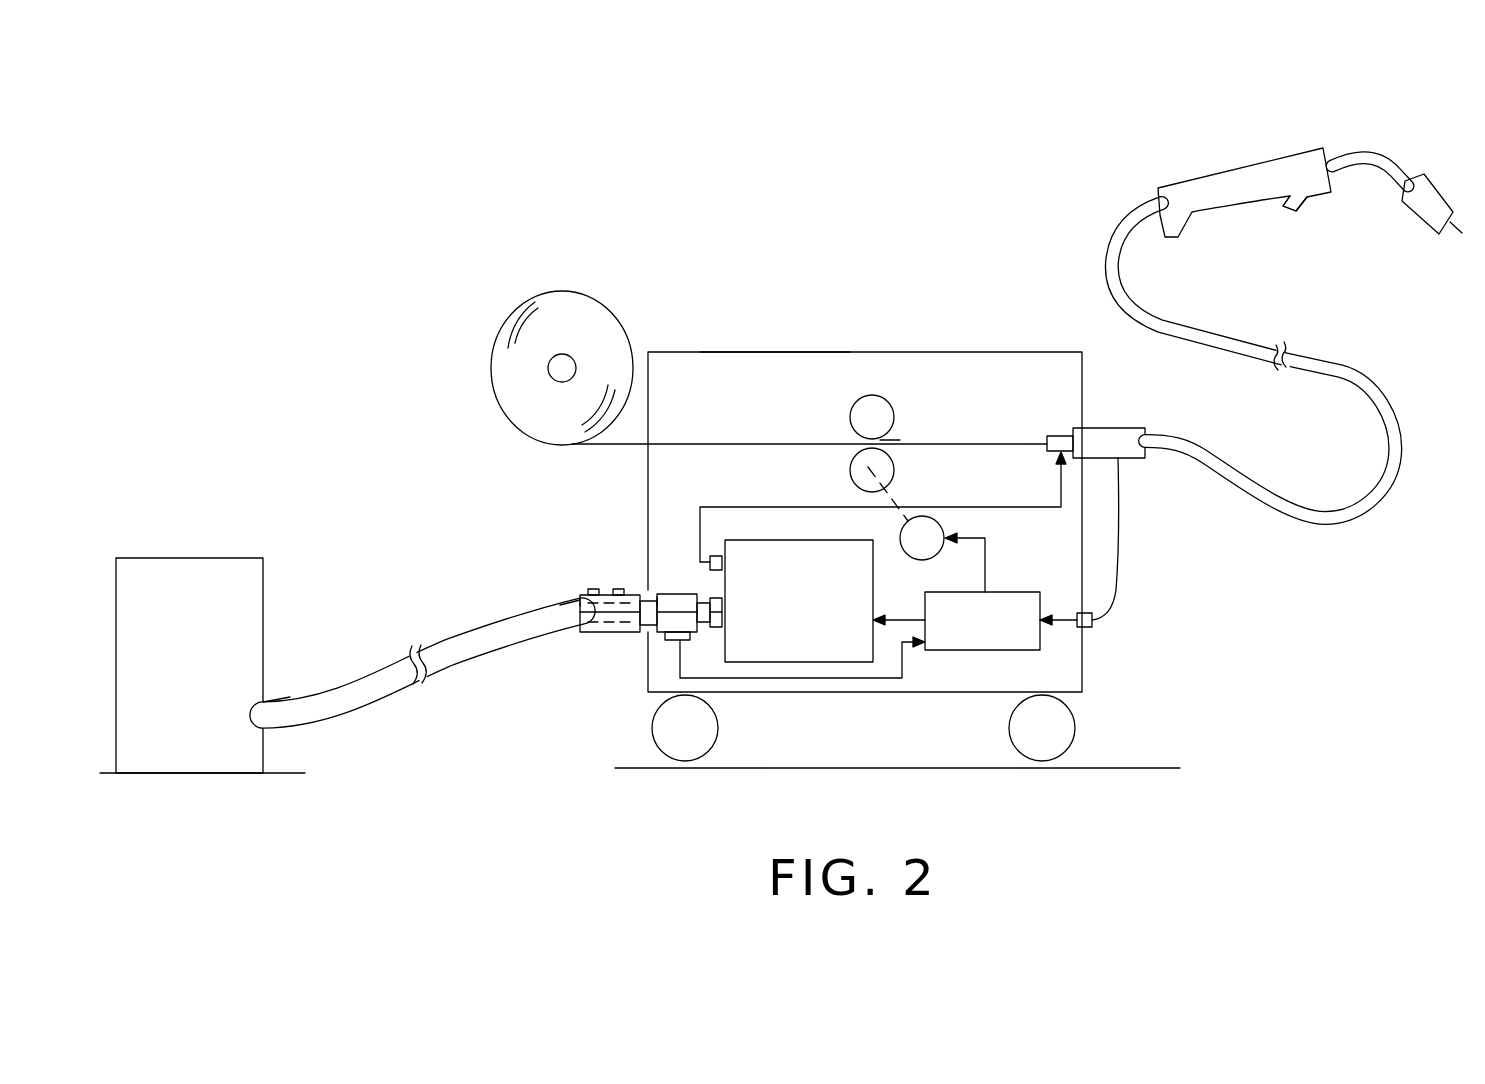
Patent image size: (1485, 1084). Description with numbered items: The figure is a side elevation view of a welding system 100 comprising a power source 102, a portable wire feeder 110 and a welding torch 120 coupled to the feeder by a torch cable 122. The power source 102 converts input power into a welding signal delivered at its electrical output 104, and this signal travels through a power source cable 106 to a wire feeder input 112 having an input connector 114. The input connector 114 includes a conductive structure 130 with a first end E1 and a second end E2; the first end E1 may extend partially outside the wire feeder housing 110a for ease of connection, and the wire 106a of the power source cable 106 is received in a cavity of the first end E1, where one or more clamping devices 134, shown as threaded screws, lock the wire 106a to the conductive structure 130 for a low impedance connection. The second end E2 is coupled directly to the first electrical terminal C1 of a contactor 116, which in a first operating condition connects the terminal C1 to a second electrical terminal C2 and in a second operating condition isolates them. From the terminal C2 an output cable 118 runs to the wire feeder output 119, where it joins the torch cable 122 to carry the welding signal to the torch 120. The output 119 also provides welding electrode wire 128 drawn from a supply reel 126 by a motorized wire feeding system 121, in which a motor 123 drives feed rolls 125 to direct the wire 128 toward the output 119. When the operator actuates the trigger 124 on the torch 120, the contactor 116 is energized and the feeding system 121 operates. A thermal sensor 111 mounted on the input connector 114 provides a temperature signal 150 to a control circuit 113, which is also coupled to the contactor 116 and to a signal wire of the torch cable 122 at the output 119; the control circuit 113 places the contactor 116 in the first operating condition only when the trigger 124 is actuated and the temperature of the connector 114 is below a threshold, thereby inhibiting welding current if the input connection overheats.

The welding system 100 is at (893, 197).
The power source 102 is at (180, 558).
The electrical output 104 is at (270, 703).
The power source cable 106 is at (456, 673).
The wire of power source cable 106a is at (592, 637).
The portable wire feeder 110 is at (950, 352).
The wire feeder housing 110a is at (775, 352).
The thermal sensor 111 is at (670, 641).
The wire feeder input 112 is at (665, 540).
The control circuit 113 is at (985, 655).
The input connector 114 is at (610, 636).
The contactor 116 is at (818, 655).
The output cable 118 is at (806, 507).
The wire feeder output 119 is at (1093, 426).
The welding torch 120 is at (1245, 170).
The motorized wire feeding system 121 is at (925, 422).
The torch cable 122 is at (1382, 388).
The motor 123 is at (947, 533).
The trigger 124 is at (1297, 212).
The feed rolls 125 is at (852, 457).
The wire supply reel 126 is at (566, 291).
The welding electrode wire 128 is at (613, 450).
The conductive structure 130 is at (600, 636).
The clamping devices 134 is at (618, 589).
The temperature signal 150 is at (873, 680).
The first electrical terminal C1 is at (714, 630).
The second electrical terminal C2 is at (716, 545).
The first end E1 is at (580, 597).
The second end E2 is at (665, 593).